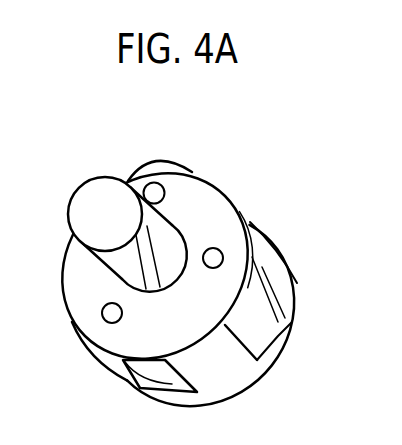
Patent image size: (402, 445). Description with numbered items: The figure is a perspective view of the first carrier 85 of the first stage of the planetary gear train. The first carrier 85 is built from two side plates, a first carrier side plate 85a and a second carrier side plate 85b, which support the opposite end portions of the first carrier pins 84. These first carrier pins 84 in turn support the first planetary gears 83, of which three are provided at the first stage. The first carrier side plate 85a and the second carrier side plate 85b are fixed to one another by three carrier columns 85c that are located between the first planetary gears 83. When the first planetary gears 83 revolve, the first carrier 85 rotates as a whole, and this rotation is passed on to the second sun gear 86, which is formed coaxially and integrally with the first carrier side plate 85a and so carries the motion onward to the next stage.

The first planetary gear 83 is at (158, 154).
The first carrier pin 84 is at (164, 194).
The first carrier 85 is at (283, 178).
The first carrier side plate 85a is at (77, 263).
The second carrier side plate 85b is at (279, 345).
The carrier column 85c is at (232, 370).
The second sun gear 86 is at (86, 196).